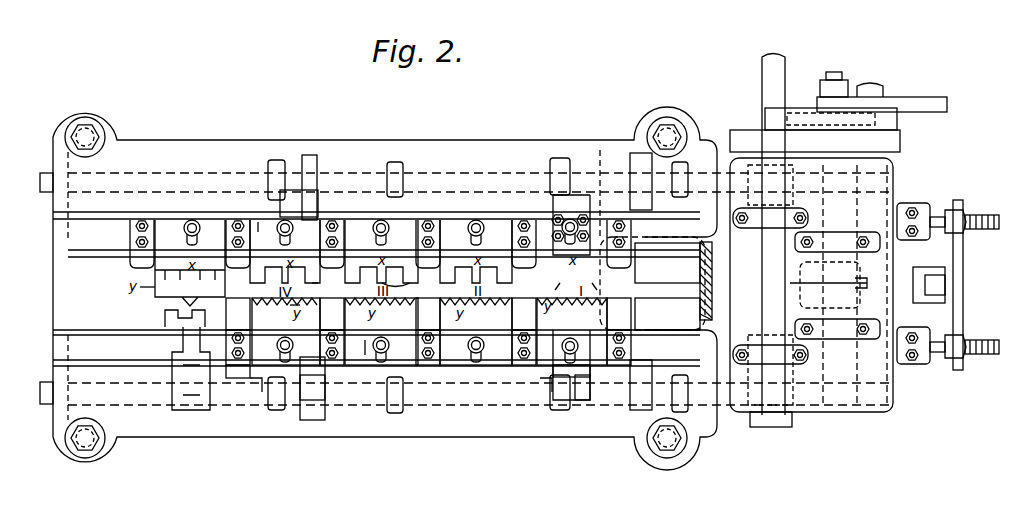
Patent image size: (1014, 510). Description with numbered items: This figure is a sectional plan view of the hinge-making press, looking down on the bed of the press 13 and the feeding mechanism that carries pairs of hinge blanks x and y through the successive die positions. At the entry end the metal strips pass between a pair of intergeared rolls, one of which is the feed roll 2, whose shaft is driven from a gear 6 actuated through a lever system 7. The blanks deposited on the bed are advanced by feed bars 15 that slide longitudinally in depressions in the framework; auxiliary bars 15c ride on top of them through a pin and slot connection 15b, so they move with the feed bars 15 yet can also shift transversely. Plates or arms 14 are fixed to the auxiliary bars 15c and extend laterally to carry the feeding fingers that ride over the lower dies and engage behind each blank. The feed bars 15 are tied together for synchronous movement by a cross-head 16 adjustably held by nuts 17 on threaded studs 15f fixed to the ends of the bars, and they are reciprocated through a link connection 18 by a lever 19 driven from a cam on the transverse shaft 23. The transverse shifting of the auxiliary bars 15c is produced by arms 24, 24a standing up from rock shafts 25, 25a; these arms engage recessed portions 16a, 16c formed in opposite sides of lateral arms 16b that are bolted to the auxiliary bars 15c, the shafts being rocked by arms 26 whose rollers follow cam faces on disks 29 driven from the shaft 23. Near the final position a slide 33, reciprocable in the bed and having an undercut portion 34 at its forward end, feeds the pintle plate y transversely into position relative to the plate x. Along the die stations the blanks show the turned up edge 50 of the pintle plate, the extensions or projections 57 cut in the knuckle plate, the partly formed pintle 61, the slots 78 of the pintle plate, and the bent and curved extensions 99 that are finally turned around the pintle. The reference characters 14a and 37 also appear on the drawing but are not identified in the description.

The feed roll 2 is at (790, 283).
The gear 6 is at (896, 145).
The lever system 7 is at (918, 105).
The bed of the press 13 is at (378, 288).
The plates or arms 14 is at (533, 340).
The lower clamping block 14a is at (619, 310).
The feed bars 15 is at (898, 364).
The pin and slot connection 15b is at (570, 338).
The auxiliary bars 15c is at (366, 352).
The threaded studs 15f is at (976, 340).
The cross-head 16 is at (963, 280).
The recessed portion 16a is at (582, 398).
The lateral arms 16b is at (588, 372).
The recessed portion 16c is at (550, 396).
The nuts 17 is at (962, 360).
The link connection 18 is at (914, 276).
The lever 19 is at (815, 296).
The shaft 23 is at (778, 72).
The arms 24 is at (560, 410).
The arms 24a is at (685, 414).
The rock shaft 25 is at (513, 398).
The rock shaft 25a is at (479, 172).
The arms 26 is at (650, 210).
The cam disks 29 is at (630, 411).
The slide 33 is at (185, 350).
The undercut portion 34 is at (166, 314).
The spring 37 is at (412, 284).
The turned up edge 50 is at (561, 291).
The extensions or projections 57 is at (601, 292).
The partly formed pintle 61 is at (490, 304).
The slots 78 is at (290, 307).
The bent and curved extensions 99 is at (308, 291).